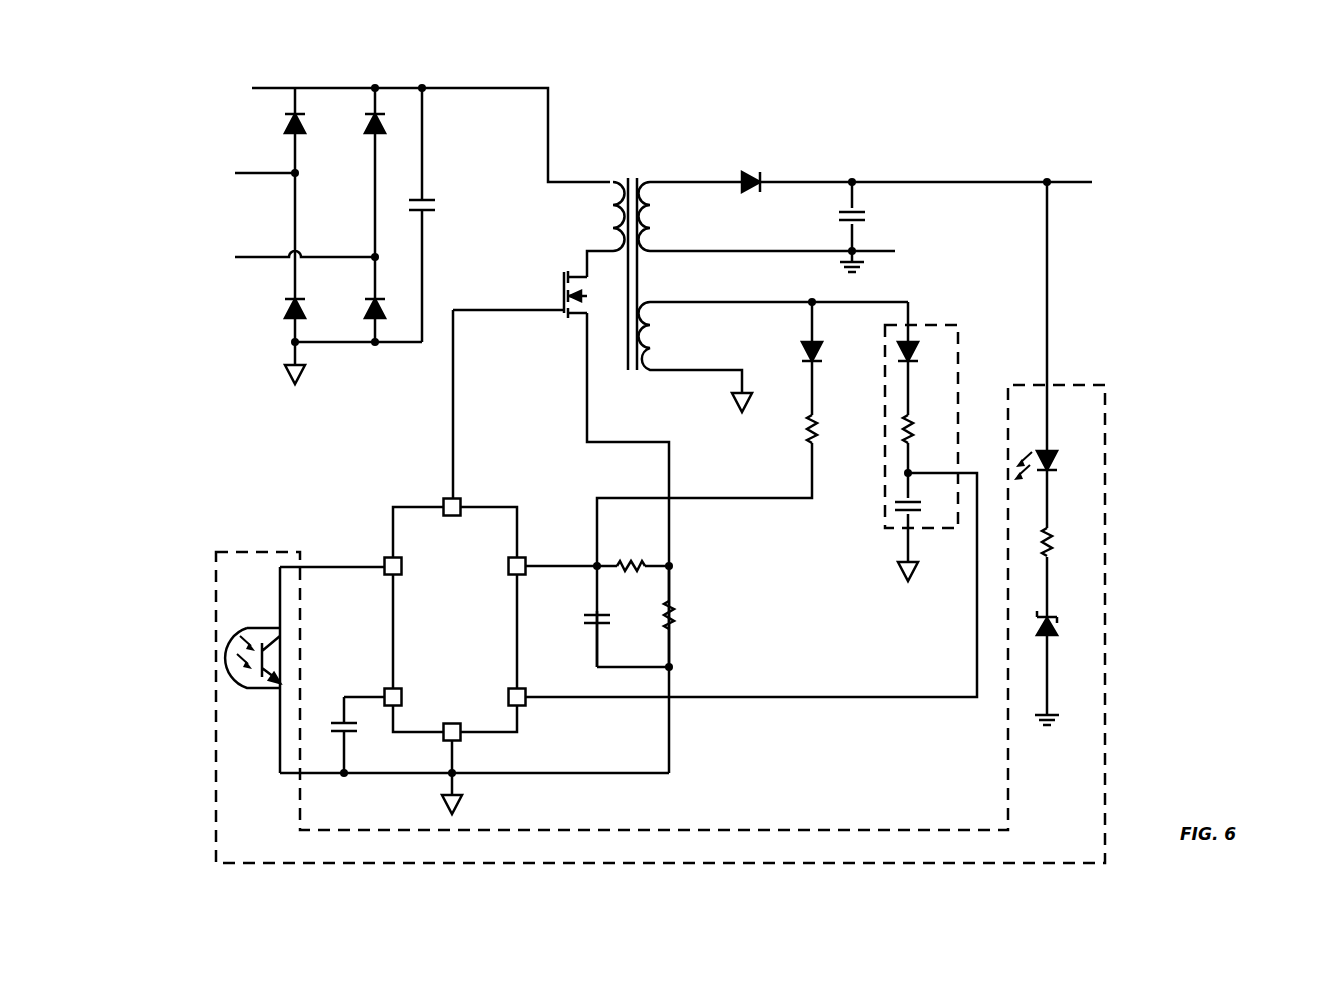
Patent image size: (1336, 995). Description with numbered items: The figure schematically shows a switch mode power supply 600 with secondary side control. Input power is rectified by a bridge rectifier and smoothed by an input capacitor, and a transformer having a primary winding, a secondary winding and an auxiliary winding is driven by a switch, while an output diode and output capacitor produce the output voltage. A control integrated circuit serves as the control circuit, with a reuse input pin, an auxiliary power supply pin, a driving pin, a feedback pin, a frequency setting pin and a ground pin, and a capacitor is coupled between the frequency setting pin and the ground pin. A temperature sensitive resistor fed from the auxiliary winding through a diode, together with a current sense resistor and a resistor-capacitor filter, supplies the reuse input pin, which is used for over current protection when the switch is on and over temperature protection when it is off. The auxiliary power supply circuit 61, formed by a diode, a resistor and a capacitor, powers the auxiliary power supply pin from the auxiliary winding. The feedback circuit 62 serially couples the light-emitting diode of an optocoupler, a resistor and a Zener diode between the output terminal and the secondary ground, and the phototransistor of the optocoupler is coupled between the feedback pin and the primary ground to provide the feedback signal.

The switch mode power supply 600 is at (973, 84).
The auxiliary power supply circuit 61 is at (886, 533).
The feedback circuit 62 is at (1062, 386).